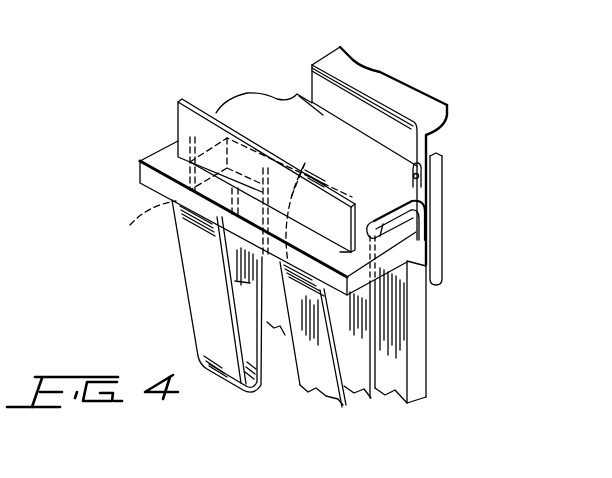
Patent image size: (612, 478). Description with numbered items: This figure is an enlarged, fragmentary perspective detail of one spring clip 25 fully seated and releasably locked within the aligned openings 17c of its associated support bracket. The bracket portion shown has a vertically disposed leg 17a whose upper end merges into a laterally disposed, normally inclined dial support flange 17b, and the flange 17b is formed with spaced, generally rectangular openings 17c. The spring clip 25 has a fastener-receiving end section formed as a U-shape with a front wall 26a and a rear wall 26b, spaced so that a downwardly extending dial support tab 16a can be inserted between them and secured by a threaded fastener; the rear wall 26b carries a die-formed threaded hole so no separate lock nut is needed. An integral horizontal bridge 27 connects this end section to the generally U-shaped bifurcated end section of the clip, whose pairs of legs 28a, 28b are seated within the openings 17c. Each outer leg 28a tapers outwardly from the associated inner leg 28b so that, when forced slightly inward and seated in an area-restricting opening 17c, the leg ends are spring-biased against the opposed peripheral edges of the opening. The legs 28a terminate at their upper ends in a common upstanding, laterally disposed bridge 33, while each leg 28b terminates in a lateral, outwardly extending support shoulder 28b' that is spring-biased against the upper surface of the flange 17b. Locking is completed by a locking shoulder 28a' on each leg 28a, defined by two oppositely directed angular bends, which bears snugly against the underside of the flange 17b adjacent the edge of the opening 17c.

The support tab 16a is at (327, 60).
The horizontal bridge 27 is at (248, 95).
The upstanding, laterally disposed bridge 33 is at (181, 128).
The opening 17c is at (229, 142).
The dial support flange 17b is at (140, 162).
The leg 17a is at (426, 337).
The front wall 26a is at (405, 212).
The rear wall 26b is at (444, 178).
The spring clip 25 is at (129, 246).
The bifurcated leg 28a is at (221, 306).
The locking shoulder 28a' is at (212, 187).
The bifurcated leg 28b is at (309, 330).
The support shoulder 28b' is at (428, 265).